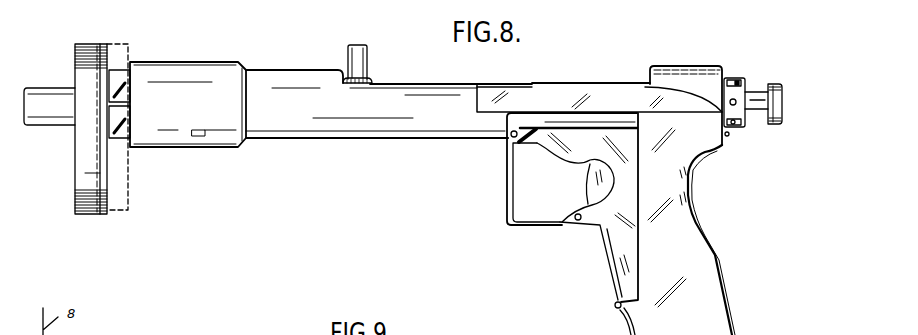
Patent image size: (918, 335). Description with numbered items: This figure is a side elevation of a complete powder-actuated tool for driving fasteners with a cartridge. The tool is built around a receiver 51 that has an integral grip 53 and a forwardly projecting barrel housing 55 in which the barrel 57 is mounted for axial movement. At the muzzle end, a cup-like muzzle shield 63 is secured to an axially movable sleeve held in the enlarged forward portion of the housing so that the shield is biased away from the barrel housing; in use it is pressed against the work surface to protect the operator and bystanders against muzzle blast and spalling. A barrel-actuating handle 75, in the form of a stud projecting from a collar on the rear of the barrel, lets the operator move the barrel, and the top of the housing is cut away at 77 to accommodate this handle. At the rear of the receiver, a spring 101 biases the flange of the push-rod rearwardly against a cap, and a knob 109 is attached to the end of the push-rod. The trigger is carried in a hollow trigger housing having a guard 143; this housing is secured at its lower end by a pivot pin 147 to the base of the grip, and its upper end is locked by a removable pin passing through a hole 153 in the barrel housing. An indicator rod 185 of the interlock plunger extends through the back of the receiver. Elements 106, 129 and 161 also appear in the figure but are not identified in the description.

The receiver 51 is at (686, 65).
The grip 53 is at (723, 272).
The barrel housing 55 is at (361, 144).
The barrel 57 is at (43, 87).
The muzzle shield 63 is at (75, 167).
The barrel-actuating handle 75 is at (370, 48).
The cut-away portion of housing top 77 is at (393, 84).
The spring 101 is at (580, 92).
The pin 106 is at (740, 128).
The knob 109 is at (777, 82).
The trigger 129 is at (582, 184).
The trigger guard 143 is at (507, 190).
The pivot pin 147 is at (616, 304).
The hole 153 is at (512, 148).
The pivot pin 161 is at (516, 131).
The indicator rod 185 is at (728, 137).